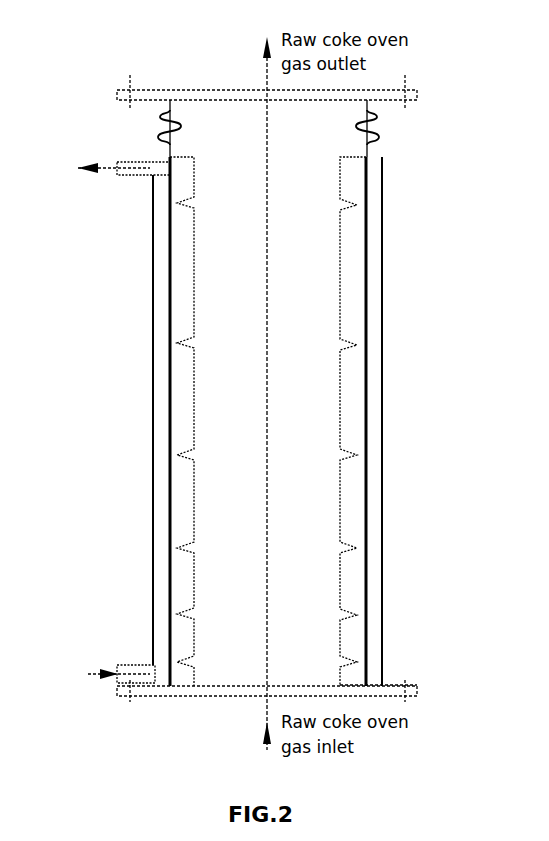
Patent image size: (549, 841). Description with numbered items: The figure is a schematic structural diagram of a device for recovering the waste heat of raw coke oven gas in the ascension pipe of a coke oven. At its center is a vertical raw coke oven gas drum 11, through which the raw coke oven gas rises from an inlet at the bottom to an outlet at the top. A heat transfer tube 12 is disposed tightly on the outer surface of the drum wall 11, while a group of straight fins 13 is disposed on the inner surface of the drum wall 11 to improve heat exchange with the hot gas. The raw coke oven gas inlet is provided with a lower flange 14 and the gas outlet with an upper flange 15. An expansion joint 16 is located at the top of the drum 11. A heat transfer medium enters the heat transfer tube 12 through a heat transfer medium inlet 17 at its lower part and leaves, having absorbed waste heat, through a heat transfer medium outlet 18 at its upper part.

The raw coke oven gas drum 11 is at (385, 565).
The heat transfer tube 12 is at (165, 570).
The group of straight fins 13 is at (350, 505).
The lower flange 14 is at (393, 684).
The upper flange 15 is at (372, 88).
The expansion joint 16 is at (378, 128).
The heat transfer medium inlet 17 is at (117, 665).
The heat transfer medium outlet 18 is at (131, 178).